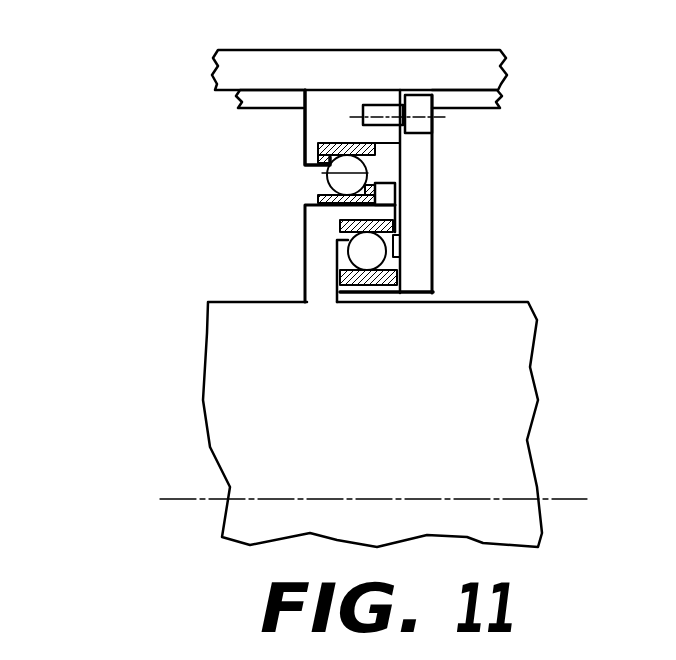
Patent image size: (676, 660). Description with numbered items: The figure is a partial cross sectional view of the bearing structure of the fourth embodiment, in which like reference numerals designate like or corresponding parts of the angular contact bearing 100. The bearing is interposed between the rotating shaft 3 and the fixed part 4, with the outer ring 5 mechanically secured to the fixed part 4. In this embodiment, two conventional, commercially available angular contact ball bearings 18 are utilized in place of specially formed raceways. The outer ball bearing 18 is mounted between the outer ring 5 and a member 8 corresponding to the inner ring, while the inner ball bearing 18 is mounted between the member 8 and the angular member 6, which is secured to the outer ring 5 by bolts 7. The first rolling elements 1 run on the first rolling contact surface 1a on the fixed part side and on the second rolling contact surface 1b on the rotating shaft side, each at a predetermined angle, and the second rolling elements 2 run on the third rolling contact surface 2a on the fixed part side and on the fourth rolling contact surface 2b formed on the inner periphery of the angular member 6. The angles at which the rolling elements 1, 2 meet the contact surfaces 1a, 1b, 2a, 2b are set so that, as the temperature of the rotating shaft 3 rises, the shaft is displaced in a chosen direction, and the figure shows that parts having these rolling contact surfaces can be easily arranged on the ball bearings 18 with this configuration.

The angular contact bearing 100 is at (228, 101).
The fixed part 4 is at (487, 75).
The outer ring 5 is at (317, 125).
The first rolling elements 1 is at (333, 185).
The first rolling contact surface 1a is at (324, 149).
The second rolling contact surface 1b is at (378, 198).
The angular contact ball bearings 18 is at (352, 196).
The bolts 7 is at (423, 127).
The angular member 6 is at (417, 167).
The second rolling elements 2 is at (378, 247).
The third rolling contact surface 2a is at (345, 239).
The fourth rolling contact surface 2b is at (398, 273).
The inner ring 8 is at (317, 285).
The rotating shaft 3 is at (222, 357).